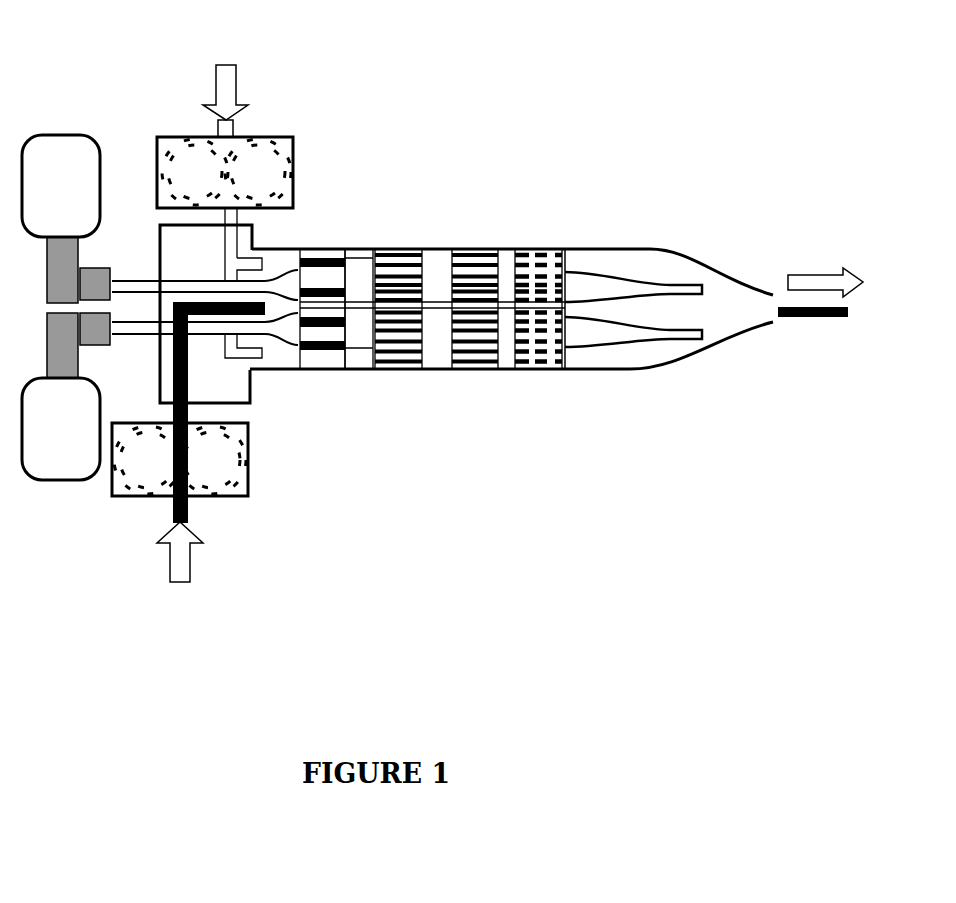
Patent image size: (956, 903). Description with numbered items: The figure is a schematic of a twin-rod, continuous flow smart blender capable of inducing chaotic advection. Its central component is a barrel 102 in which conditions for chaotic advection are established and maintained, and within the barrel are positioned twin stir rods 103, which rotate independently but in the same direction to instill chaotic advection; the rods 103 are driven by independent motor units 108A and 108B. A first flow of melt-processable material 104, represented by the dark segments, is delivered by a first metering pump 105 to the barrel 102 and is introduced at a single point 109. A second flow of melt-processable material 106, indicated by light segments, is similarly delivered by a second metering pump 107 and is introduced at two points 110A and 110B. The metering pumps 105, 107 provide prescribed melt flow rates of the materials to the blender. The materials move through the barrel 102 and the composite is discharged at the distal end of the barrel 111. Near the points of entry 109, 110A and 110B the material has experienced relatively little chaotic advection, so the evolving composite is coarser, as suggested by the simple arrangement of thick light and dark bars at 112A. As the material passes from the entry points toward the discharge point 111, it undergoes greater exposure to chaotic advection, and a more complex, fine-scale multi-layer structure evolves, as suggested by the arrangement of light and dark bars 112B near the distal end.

The barrel 102 is at (578, 249).
The twin stir rods 103 is at (683, 293).
The first flow (melt-processable material) 104 is at (187, 563).
The first metering pump 105 is at (248, 453).
The second flow (melt-processable material) 106 is at (235, 78).
The second metering pump 107 is at (295, 148).
The motor unit 108A is at (53, 135).
The motor unit 108B is at (53, 480).
The single introduction point 109 is at (267, 300).
The introduction point 110A is at (262, 262).
The introduction point 110B is at (263, 357).
The distal end of the barrel (discharge point) 111 is at (787, 323).
The arrangement of light and dark bars near entry 112A is at (323, 353).
The arrangement of light and dark bars near discharge 112B is at (545, 363).